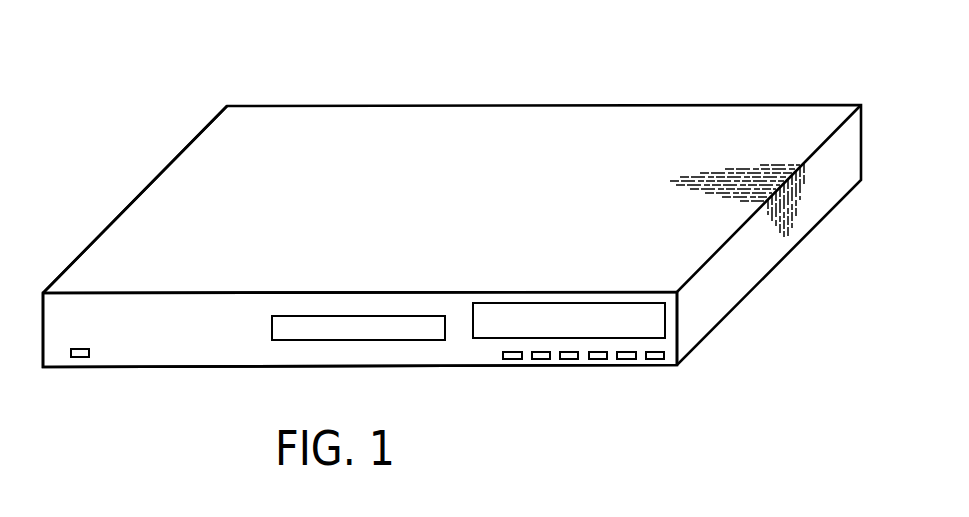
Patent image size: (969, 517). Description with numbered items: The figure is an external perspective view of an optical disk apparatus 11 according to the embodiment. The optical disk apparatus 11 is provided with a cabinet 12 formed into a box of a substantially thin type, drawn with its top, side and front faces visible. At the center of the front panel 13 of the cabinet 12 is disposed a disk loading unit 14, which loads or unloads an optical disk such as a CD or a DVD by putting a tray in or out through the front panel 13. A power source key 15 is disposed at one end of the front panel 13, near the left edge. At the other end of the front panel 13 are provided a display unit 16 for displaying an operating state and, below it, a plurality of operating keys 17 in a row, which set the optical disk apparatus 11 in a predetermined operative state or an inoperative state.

The optical disk apparatus 11 is at (573, 85).
The cabinet 12 is at (773, 268).
The front panel 13 is at (170, 353).
The disk loading unit 14 is at (338, 325).
The power source key 15 is at (79, 357).
The display unit 16 is at (570, 318).
The operating keys 17 is at (567, 362).